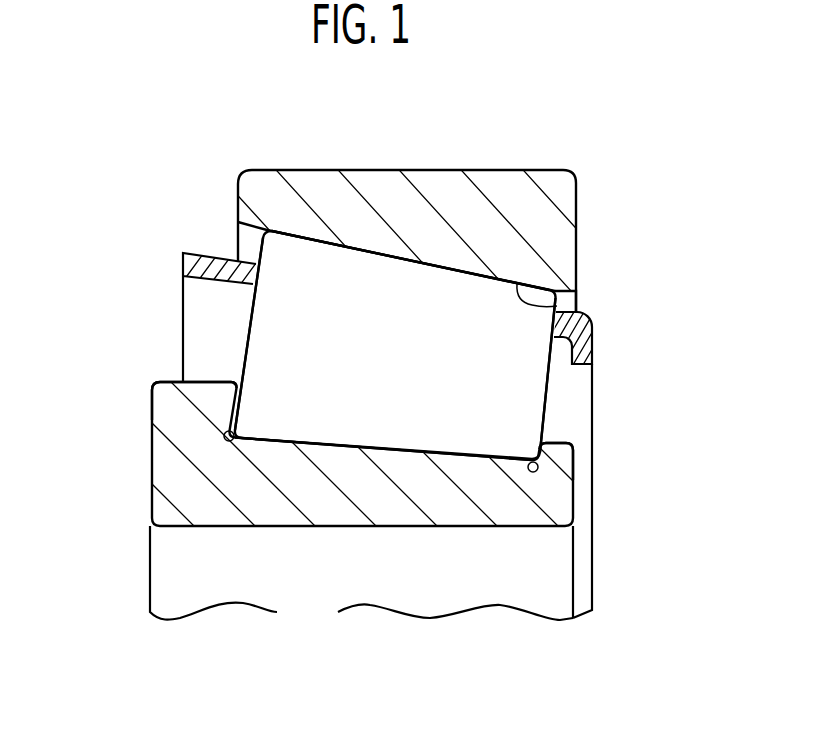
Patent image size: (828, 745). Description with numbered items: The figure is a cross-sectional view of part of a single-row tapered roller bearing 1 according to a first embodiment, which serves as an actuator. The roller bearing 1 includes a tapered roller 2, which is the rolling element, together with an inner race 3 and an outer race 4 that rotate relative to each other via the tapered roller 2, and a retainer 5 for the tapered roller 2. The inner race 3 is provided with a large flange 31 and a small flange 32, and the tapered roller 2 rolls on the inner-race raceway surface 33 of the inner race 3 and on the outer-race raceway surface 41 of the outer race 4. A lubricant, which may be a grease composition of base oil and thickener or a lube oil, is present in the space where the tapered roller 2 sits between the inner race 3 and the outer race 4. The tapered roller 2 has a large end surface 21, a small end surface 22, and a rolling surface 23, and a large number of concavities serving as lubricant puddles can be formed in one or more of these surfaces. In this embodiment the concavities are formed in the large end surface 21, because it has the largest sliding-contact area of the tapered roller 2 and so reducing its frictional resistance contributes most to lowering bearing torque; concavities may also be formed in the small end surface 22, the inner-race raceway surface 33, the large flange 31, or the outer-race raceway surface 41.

The tapered roller bearing 1 is at (555, 116).
The tapered roller 2 is at (377, 301).
The large end surface 21 is at (247, 333).
The small end surface 22 is at (546, 396).
The rolling surface 23 is at (477, 274).
The inner race 3 is at (183, 478).
The large flange 31 is at (220, 402).
The small flange 32 is at (557, 450).
The inner-race raceway surface 33 is at (418, 453).
The outer race 4 is at (567, 245).
The outer-race raceway surface 41 is at (557, 306).
The retainer 5 is at (588, 352).